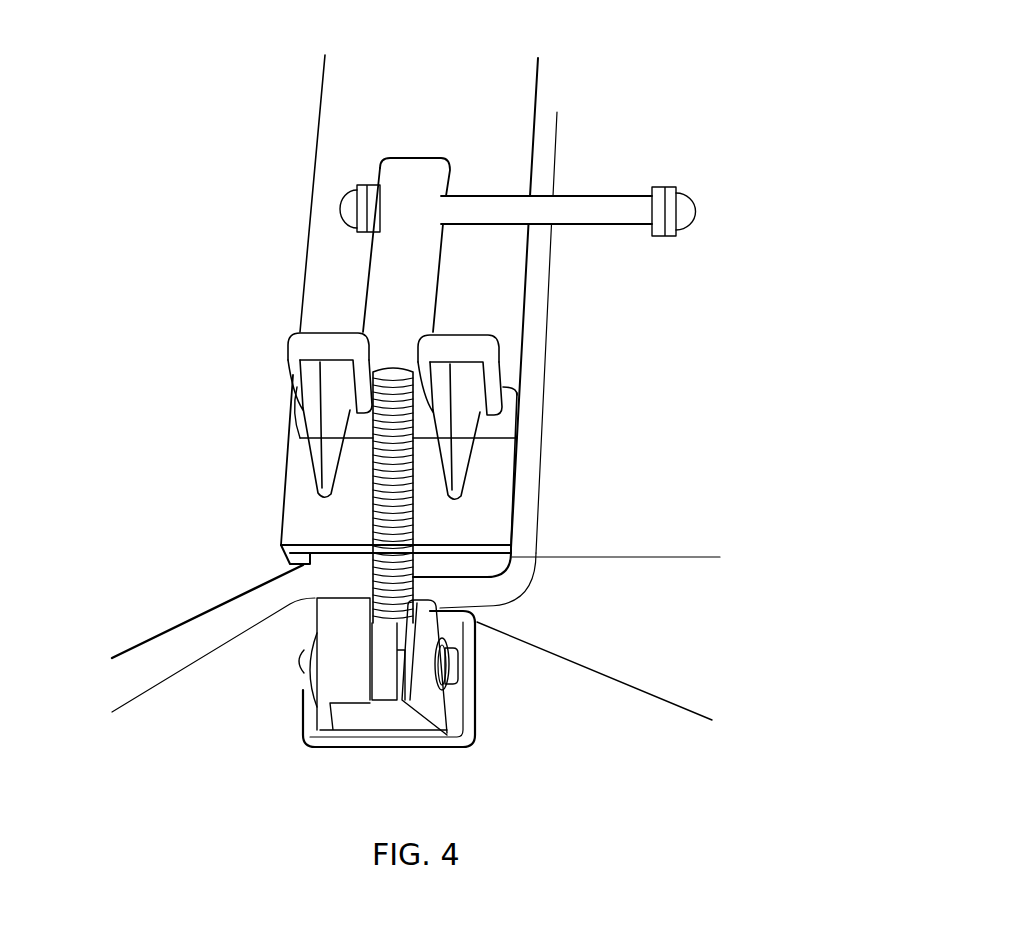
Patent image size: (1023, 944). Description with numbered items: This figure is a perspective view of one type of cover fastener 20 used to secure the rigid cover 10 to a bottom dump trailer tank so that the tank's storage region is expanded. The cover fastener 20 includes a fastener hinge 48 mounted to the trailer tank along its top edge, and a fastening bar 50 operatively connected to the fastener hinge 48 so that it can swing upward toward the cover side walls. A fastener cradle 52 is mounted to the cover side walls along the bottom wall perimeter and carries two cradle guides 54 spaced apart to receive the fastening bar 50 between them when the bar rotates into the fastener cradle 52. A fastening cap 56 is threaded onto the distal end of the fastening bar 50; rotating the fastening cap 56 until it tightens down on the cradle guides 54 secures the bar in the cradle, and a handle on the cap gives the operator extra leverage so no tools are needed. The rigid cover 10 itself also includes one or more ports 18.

The rigid cover 10 is at (994, 302).
The port 18 is at (597, 200).
The cover fastener 20 is at (697, 351).
The fastener hinge 48 is at (453, 724).
The fastening bar 50 is at (377, 542).
The fastener cradle 52 is at (509, 414).
The cradle guide 54 is at (433, 342).
The fastening cap 56 is at (405, 176).